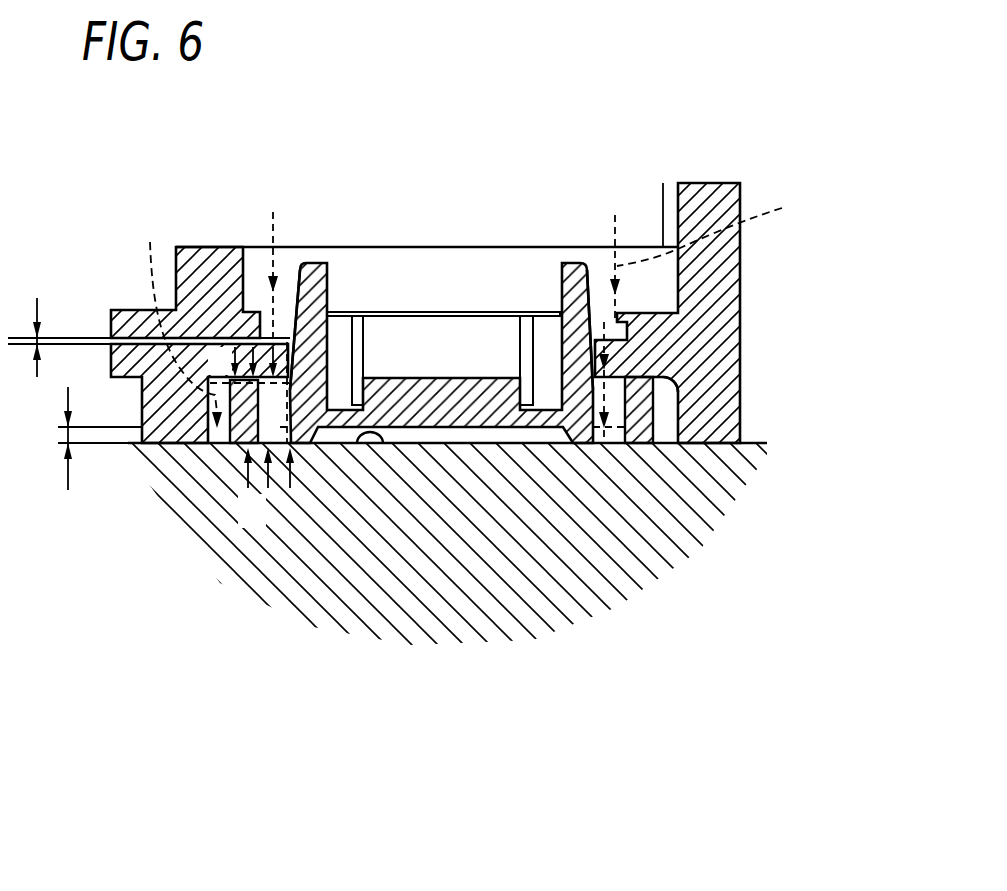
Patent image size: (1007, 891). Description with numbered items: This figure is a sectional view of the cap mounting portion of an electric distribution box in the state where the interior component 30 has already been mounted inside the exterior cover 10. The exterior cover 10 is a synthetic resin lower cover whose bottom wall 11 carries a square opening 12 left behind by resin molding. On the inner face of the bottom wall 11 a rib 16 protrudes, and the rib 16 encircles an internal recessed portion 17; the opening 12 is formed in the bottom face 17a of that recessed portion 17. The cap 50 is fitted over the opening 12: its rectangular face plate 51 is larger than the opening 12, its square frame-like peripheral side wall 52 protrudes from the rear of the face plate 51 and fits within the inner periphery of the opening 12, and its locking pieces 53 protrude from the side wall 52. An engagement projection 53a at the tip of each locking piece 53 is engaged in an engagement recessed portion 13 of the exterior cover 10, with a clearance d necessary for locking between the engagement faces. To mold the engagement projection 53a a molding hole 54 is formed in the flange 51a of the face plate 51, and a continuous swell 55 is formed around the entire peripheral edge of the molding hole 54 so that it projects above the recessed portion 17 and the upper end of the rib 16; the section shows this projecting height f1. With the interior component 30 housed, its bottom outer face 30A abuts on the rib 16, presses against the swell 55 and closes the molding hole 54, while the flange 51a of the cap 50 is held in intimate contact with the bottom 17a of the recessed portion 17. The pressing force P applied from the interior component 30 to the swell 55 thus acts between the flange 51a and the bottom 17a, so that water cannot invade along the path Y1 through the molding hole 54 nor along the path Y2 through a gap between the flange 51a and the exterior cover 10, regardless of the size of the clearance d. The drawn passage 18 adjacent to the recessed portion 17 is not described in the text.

The exterior cover 10 is at (755, 304).
The bottom wall 11 is at (122, 328).
The opening 12 is at (618, 306).
The engagement recessed portion 13 is at (277, 308).
The rib 16 is at (168, 445).
The recessed portion 17 is at (666, 408).
The bottom face of recessed portion 17a is at (678, 393).
The channel 18 is at (605, 447).
The interior component 30 is at (458, 610).
The outer face 30A is at (371, 440).
The cap 50 is at (500, 443).
The face plate 51 is at (442, 404).
The flange 51a is at (728, 447).
The peripheral side wall 52 is at (557, 350).
The locking piece 53 is at (310, 264).
The engagement projection 53a is at (292, 263).
The molding hole 54 is at (283, 420).
The swell 55 is at (243, 405).
The water invasion path Y1 is at (721, 227).
The water invasion path Y2 is at (174, 317).
The pressing force P is at (251, 436).
The clearance d is at (38, 318).
The gap dimension f1 is at (87, 442).